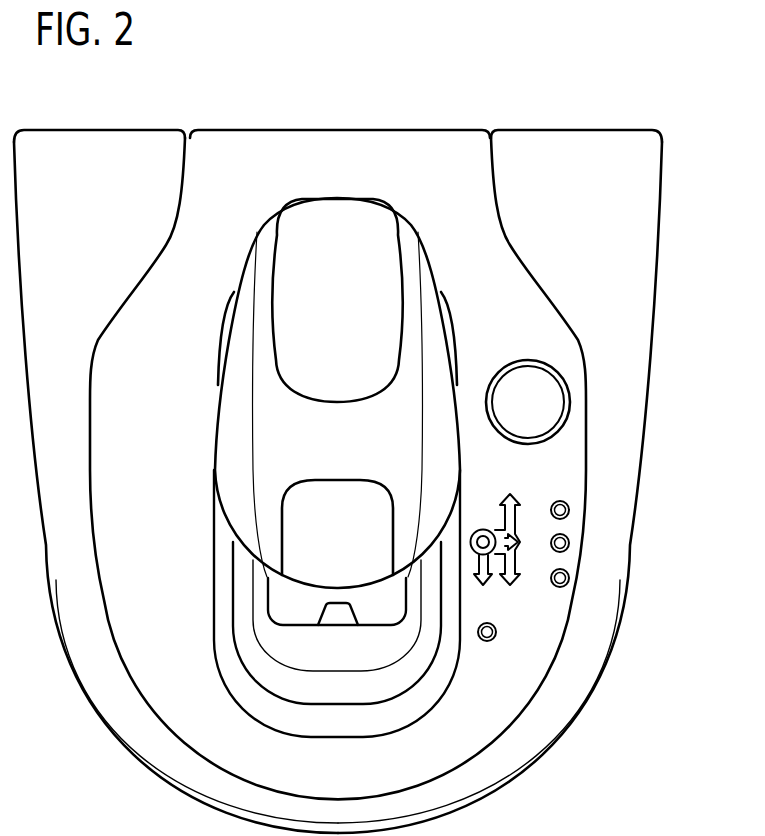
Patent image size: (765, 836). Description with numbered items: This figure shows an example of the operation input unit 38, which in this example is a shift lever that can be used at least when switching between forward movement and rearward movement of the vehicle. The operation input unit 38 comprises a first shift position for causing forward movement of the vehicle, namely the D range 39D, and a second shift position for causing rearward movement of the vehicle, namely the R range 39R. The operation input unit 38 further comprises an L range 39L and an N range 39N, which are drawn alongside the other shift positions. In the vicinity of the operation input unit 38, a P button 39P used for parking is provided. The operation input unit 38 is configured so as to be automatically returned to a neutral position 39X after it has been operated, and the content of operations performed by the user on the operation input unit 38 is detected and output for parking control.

The operation input unit 38 is at (273, 110).
The P button 39P is at (550, 397).
The neutral position 39X is at (483, 535).
The R range 39R is at (550, 505).
The N range 39N is at (545, 543).
The D range 39D is at (570, 580).
The L range 39L is at (495, 608).